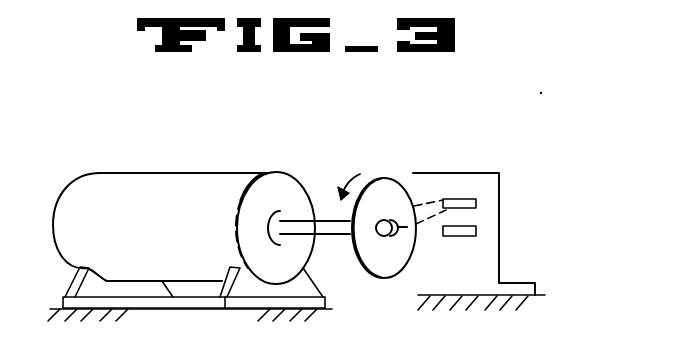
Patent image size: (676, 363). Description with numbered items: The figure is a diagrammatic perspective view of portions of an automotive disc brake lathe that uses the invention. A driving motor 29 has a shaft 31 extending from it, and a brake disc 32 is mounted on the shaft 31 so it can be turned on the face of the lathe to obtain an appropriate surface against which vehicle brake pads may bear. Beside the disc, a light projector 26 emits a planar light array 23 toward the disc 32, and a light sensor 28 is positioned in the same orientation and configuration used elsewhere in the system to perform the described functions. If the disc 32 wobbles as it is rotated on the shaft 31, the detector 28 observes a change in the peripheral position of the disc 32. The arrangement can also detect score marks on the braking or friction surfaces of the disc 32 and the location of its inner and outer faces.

The planar light array 23 is at (435, 202).
The light projector 26 is at (464, 208).
The light sensor 28 is at (429, 231).
The driving motor 29 is at (107, 172).
The shaft 31 is at (322, 220).
The brake disc 32 is at (373, 274).